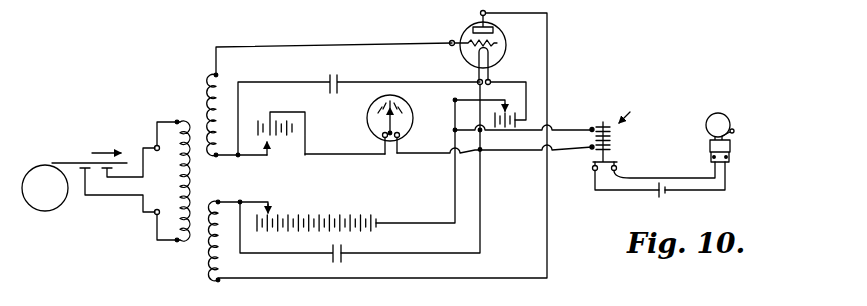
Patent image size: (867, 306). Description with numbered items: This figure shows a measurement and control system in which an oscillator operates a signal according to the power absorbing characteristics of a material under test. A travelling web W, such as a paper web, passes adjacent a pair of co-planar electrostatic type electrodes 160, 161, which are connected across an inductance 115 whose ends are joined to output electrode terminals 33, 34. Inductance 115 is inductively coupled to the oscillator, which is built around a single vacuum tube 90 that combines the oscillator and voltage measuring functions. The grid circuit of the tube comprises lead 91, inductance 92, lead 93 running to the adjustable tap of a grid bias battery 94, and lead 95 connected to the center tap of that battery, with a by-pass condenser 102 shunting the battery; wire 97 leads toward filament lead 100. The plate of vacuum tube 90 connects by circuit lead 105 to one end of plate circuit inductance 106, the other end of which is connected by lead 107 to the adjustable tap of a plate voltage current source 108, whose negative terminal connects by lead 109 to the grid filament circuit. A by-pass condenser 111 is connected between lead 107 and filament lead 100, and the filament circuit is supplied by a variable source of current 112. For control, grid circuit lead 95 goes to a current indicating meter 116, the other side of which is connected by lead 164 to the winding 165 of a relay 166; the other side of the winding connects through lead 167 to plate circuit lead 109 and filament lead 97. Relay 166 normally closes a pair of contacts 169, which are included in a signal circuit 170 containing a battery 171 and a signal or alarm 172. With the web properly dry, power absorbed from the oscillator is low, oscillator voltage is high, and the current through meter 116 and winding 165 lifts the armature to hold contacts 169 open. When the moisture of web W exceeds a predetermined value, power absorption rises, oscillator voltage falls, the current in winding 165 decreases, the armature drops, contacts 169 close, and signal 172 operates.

The travelling web W is at (66, 162).
The output electrode terminal 33 is at (155, 146).
The output electrode terminal 34 is at (157, 216).
The electrostatic type electrode 160 is at (85, 196).
The electrostatic type electrode 161 is at (108, 180).
The inductance 115 is at (191, 177).
The inductance 92 is at (213, 76).
The lead 91 is at (334, 52).
The lead 93 is at (256, 157).
The grid bias battery 94 is at (295, 140).
The lead 95 is at (343, 153).
The by-pass condenser 102 is at (340, 80).
The current indicating meter 116 is at (368, 122).
The wire 97 is at (453, 117).
The vacuum tube 90 is at (465, 32).
The variable source of current 112 is at (515, 116).
The lead 167 is at (577, 128).
The lead 164 is at (575, 150).
The winding 165 is at (612, 137).
The relay 166 is at (630, 111).
The contacts 169 is at (633, 176).
The signal circuit 170 is at (633, 191).
The battery 171 is at (670, 192).
The signal or alarm 172 is at (727, 117).
The circuit lead 105 is at (556, 228).
The filament lead 100 is at (483, 186).
The lead 109 is at (455, 183).
The plate circuit inductance 106 is at (212, 278).
The lead 107 is at (258, 200).
The plate voltage current source 108 is at (328, 222).
The by-pass condenser 111 is at (345, 258).